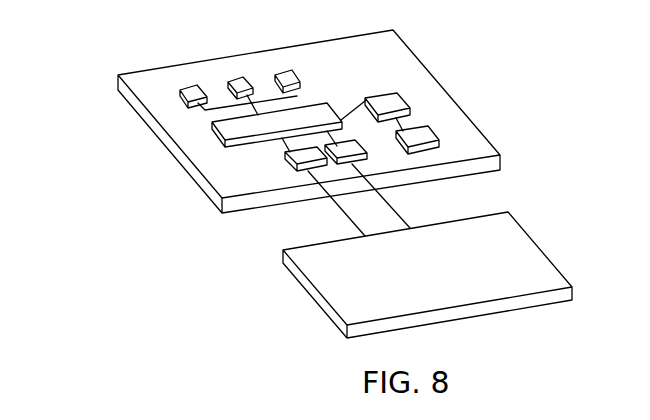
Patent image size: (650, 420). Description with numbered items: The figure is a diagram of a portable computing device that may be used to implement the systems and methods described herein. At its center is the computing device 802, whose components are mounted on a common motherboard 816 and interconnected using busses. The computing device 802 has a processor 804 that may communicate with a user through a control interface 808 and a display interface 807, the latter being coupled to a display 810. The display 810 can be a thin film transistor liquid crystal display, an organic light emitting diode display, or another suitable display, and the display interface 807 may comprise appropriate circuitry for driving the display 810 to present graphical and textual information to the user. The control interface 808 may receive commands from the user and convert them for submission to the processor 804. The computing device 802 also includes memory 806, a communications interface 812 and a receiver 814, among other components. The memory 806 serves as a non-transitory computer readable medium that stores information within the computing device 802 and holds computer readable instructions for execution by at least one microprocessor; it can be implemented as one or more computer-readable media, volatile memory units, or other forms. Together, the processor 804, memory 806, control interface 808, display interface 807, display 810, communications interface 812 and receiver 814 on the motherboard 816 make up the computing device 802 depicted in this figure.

The computing device 802 is at (432, 29).
The processor 804 is at (213, 124).
The memory 806 is at (238, 79).
The display interface 807 is at (352, 143).
The control interface 808 is at (297, 168).
The display 810 is at (282, 255).
The communications interface 812 is at (402, 96).
The receiver 814 is at (428, 126).
The motherboard 816 is at (118, 93).